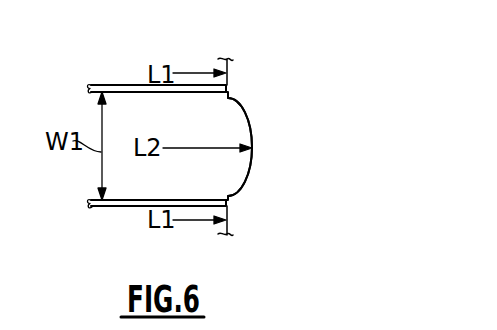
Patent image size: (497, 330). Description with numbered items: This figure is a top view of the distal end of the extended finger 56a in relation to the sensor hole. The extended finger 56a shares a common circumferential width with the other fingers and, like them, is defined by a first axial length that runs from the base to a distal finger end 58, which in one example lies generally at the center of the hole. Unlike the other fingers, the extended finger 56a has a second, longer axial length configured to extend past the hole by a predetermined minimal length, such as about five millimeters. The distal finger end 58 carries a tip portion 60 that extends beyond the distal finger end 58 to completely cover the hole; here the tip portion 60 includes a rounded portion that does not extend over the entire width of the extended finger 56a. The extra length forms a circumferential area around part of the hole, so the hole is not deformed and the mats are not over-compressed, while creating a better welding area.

The extended finger 56a is at (174, 122).
The distal finger end 58 is at (230, 73).
The tip portion 60 is at (252, 164).